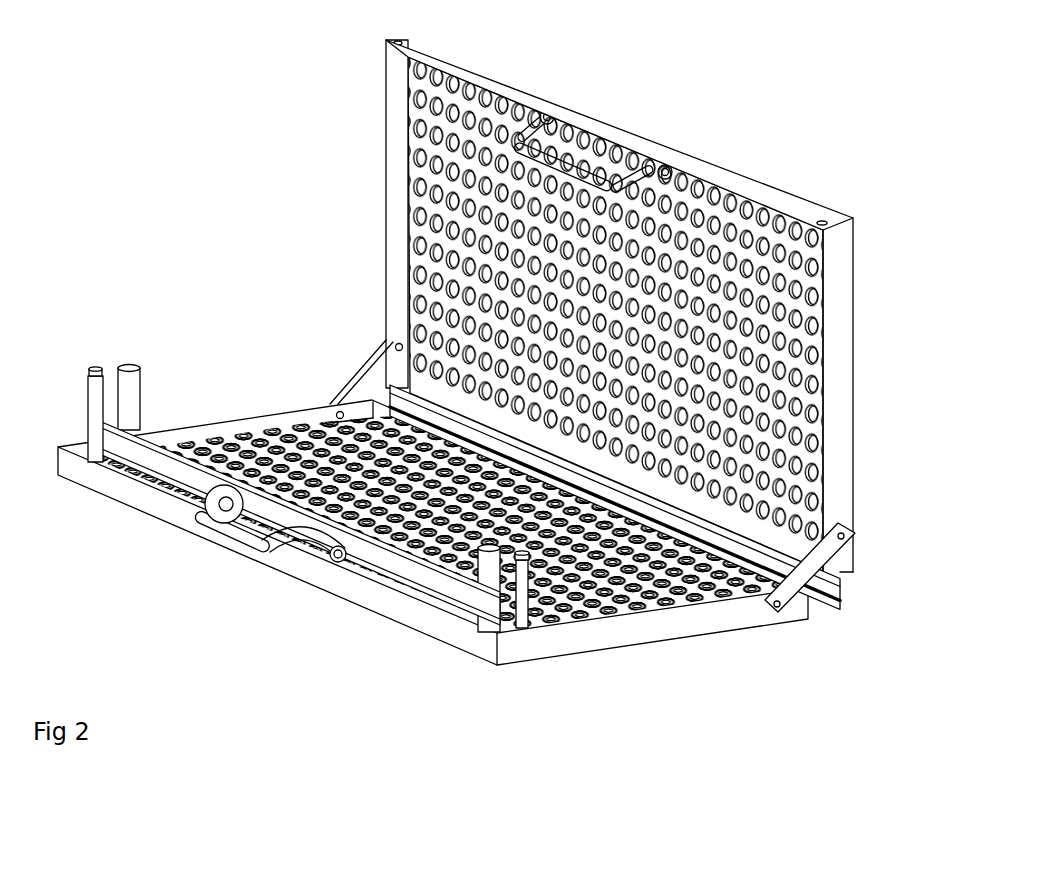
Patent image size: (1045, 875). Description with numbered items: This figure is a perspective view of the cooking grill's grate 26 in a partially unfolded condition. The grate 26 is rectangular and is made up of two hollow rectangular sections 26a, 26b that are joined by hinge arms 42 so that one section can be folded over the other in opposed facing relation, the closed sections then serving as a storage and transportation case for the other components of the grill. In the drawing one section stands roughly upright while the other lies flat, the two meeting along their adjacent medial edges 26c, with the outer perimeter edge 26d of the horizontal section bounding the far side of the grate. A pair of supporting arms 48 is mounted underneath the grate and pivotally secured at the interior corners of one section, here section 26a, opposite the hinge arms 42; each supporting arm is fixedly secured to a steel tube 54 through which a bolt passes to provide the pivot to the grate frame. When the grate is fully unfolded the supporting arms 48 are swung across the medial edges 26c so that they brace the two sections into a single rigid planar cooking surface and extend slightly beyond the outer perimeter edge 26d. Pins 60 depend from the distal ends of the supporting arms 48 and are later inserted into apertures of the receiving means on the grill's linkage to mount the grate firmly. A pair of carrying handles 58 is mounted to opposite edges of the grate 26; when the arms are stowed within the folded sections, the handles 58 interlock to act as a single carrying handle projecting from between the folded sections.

The grate 26 is at (285, 360).
The grate section 26a is at (392, 437).
The grate section 26b is at (640, 330).
The medial edges 26c is at (750, 550).
The outer perimeter edge 26d is at (624, 135).
The hinge arms 42 is at (800, 592).
The supporting arms 48 is at (310, 620).
The steel tube 54 is at (96, 392).
The carrying handles 58 is at (553, 158).
The pins 60 is at (137, 388).